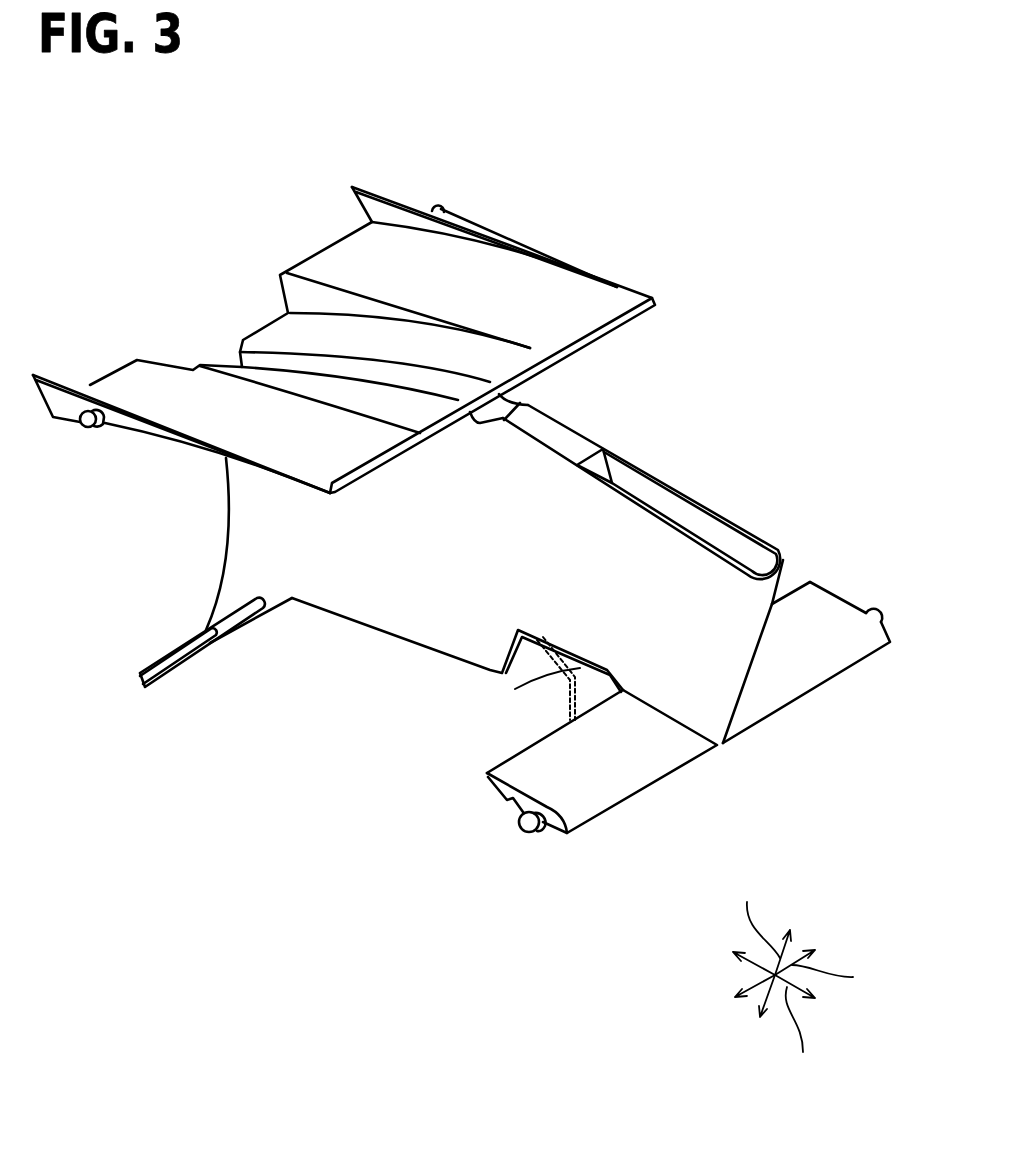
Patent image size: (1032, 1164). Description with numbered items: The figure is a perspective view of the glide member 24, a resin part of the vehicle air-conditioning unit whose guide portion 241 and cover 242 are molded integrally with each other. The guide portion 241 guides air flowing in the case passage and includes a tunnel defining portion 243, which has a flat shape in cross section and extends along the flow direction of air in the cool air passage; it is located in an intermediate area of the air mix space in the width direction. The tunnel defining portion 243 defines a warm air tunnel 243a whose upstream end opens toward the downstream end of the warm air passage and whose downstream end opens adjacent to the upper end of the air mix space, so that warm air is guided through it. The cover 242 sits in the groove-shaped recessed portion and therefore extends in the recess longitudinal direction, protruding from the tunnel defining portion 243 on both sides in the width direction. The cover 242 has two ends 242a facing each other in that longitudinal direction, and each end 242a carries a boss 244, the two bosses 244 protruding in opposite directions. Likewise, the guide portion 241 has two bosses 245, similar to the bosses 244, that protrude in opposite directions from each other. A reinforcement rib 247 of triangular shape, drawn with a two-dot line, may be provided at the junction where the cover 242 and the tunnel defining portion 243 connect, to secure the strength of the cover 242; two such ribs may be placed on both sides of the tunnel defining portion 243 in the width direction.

The glide member 24 is at (766, 190).
The guide portion 241 is at (583, 420).
The cover 242 is at (810, 676).
The end 242a is at (835, 590).
The tunnel defining portion 243 is at (255, 537).
The warm air tunnel 243a is at (275, 362).
The boss 244 is at (876, 610).
The boss 245 is at (446, 207).
The reinforcement rib 247 is at (507, 692).